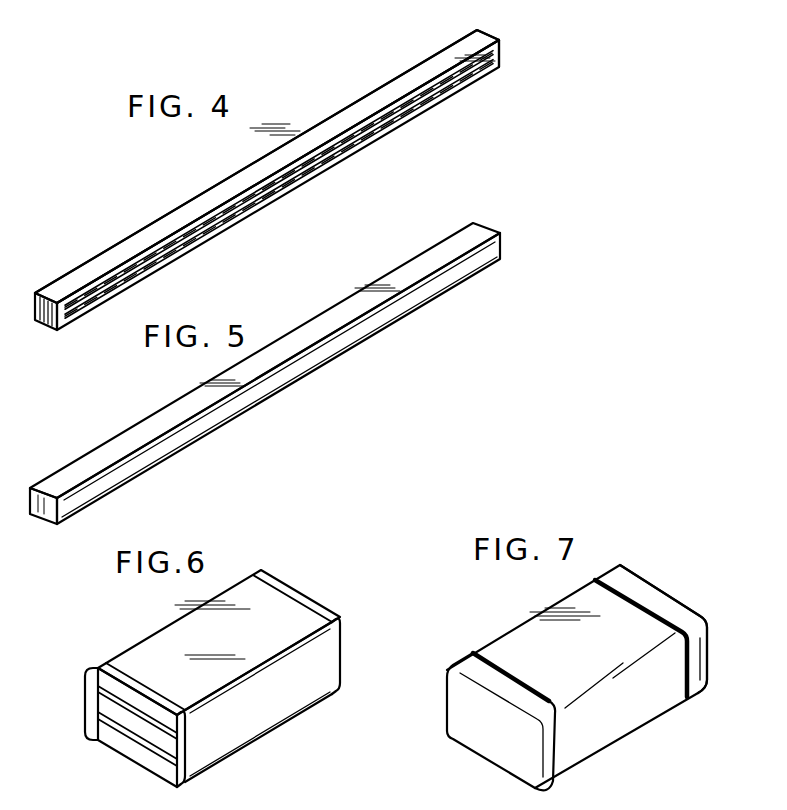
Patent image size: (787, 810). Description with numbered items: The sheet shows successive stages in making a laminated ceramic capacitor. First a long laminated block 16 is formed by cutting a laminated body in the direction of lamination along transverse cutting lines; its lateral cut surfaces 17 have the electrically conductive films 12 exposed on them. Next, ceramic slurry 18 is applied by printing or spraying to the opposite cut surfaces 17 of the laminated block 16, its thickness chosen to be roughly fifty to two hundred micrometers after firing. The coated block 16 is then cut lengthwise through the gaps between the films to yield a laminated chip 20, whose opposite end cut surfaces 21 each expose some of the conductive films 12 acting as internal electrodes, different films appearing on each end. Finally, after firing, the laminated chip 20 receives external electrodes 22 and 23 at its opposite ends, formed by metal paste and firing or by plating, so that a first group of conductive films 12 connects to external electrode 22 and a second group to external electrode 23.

In FIG. 4, the electrically conductive film 12 is at (405, 114).
In FIG. 6, the electrically conductive film 12 is at (107, 697).
In FIG. 4, the laminated block 16 is at (499, 34).
In FIG. 5, the laminated block 16 is at (490, 228).
In FIG. 4, the cut surface 17 is at (417, 63).
In FIG. 5, the ceramic slurry 18 is at (31, 496).
In FIG. 6, the ceramic slurry 18 is at (87, 694).
In FIG. 6, the laminated chip 20 is at (287, 573).
In FIG. 7, the laminated chip 20 is at (531, 611).
In FIG. 6, the cut surface 21 is at (125, 750).
In FIG. 7, the external electrode 22 is at (458, 738).
In FIG. 7, the external electrode 23 is at (658, 597).